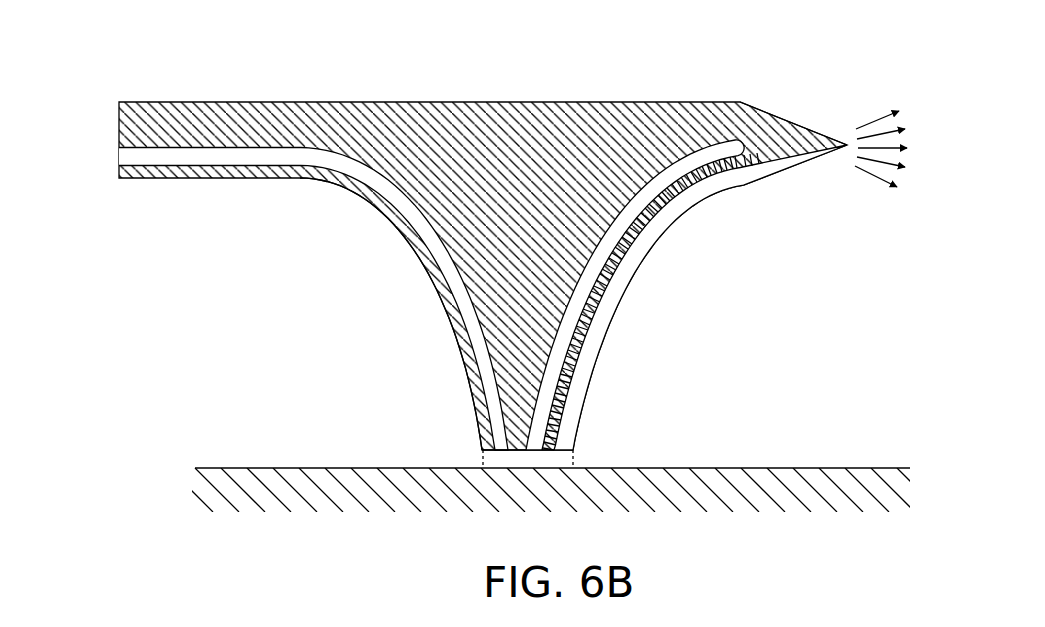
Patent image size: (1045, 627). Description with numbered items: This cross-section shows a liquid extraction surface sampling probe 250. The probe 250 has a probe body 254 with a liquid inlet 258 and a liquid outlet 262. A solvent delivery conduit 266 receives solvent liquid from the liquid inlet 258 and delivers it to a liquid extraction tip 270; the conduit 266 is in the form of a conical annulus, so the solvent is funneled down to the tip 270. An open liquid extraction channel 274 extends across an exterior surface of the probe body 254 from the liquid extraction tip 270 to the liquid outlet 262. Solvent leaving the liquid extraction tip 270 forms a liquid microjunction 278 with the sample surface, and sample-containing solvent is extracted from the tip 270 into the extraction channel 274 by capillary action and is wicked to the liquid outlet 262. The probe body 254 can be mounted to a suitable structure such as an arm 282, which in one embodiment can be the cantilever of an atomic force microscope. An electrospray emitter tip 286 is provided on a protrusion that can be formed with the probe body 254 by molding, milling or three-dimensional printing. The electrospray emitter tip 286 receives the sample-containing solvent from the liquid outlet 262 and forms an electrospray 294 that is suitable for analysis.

The liquid extraction surface sampling probe 250 is at (470, 248).
The probe body 254 is at (413, 266).
The liquid inlet 258 is at (119, 153).
The liquid outlet 262 is at (767, 164).
The solvent delivery conduit 266 is at (557, 347).
The liquid extraction tip 270 is at (482, 451).
The open liquid extraction channel 274 is at (657, 229).
The liquid microjunction 278 is at (577, 461).
The arm 282 is at (169, 102).
The electrospray emitter tip 286 is at (792, 123).
The electrospray 294 is at (870, 178).